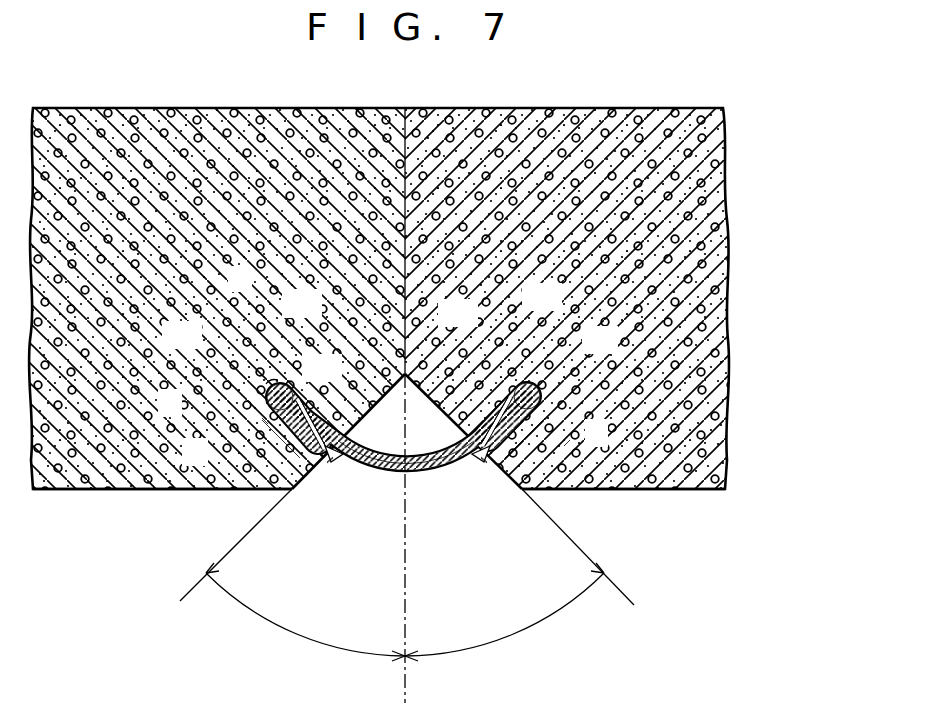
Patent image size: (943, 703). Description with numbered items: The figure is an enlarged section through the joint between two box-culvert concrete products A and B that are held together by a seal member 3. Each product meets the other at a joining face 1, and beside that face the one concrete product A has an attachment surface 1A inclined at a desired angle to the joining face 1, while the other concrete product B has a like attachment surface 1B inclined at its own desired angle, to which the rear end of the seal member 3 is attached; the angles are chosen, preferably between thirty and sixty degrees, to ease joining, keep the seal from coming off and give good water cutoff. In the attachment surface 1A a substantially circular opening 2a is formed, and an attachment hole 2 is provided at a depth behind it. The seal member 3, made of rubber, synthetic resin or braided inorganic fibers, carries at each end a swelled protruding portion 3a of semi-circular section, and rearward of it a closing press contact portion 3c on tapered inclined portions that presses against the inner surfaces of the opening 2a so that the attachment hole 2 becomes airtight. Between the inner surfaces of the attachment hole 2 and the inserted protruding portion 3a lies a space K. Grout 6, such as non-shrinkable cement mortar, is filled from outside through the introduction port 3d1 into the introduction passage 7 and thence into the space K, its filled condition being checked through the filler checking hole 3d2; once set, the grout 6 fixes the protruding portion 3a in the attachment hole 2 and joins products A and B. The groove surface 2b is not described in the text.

The concrete product A is at (96, 128).
The concrete product B is at (627, 130).
The joining face 1 is at (400, 155).
The attachment surface 1A is at (352, 355).
The attachment surface 1B is at (433, 380).
The attachment hole 2 is at (257, 393).
The opening 2a is at (342, 458).
The groove side surface 2b is at (494, 385).
The seal member 3 is at (283, 490).
The protruding portion 3a is at (392, 366).
The closing press contact portion 3c is at (346, 428).
The introduction port 3d1 is at (327, 460).
The filler checking hole 3d2 is at (408, 523).
The grout 6 is at (212, 486).
The introduction passage 7 is at (270, 378).
The space K is at (262, 418).